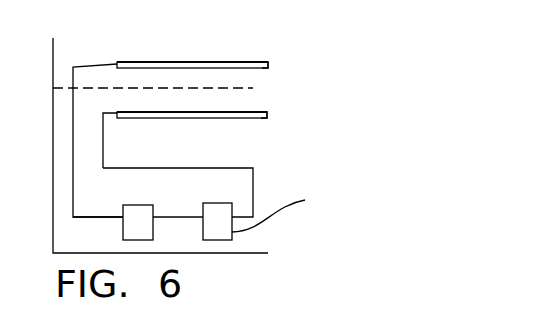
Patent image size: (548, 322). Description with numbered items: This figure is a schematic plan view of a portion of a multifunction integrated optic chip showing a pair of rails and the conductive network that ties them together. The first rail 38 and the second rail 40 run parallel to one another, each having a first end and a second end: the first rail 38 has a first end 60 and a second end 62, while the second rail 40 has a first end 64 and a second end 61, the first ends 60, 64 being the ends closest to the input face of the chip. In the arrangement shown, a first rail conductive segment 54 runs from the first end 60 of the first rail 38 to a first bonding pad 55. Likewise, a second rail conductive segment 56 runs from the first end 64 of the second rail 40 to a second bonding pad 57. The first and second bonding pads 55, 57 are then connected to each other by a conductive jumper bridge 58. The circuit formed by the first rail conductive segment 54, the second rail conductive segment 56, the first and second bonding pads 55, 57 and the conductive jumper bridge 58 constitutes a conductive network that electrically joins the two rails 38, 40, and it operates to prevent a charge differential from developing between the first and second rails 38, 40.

The first rail 38 is at (155, 60).
The second rail 40 is at (183, 122).
The first rail conductive segment 54 is at (78, 218).
The first bonding pad 55 is at (147, 210).
The second rail conductive segment 56 is at (258, 184).
The second bonding pad 57 is at (270, 215).
The conductive jumper bridge 58 is at (178, 212).
The first end of the first rail 60 is at (130, 58).
The second end of the second rail 61 is at (262, 124).
The second end of the first rail 62 is at (253, 57).
The first end of the second rail 64 is at (120, 122).